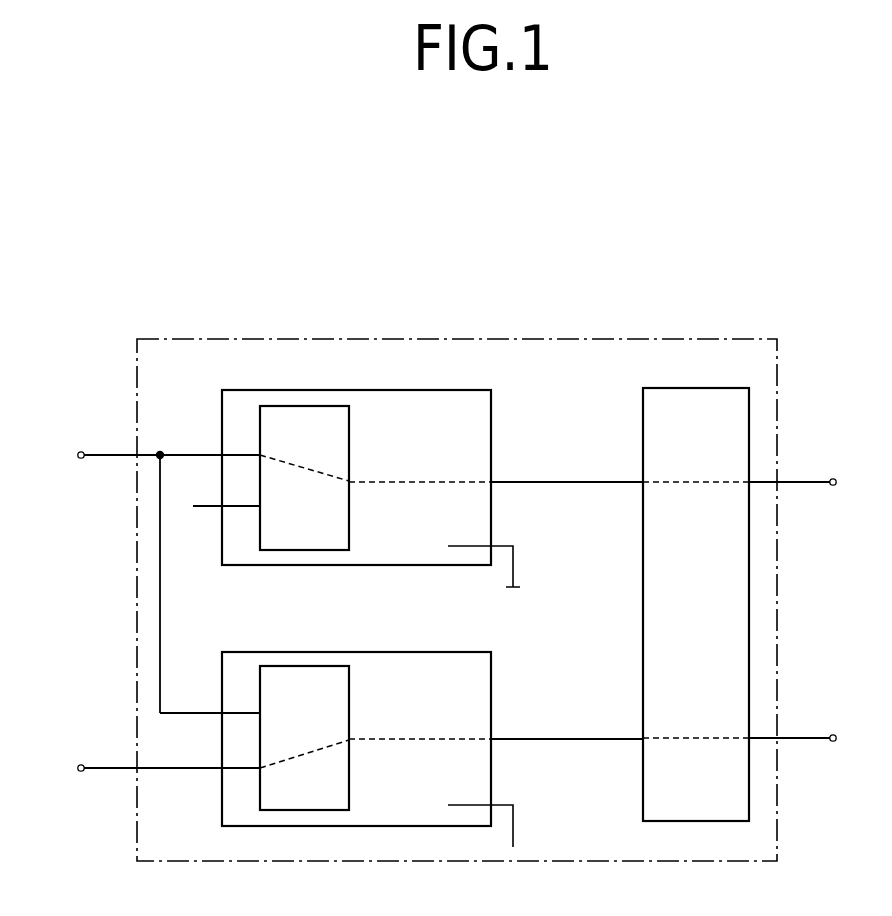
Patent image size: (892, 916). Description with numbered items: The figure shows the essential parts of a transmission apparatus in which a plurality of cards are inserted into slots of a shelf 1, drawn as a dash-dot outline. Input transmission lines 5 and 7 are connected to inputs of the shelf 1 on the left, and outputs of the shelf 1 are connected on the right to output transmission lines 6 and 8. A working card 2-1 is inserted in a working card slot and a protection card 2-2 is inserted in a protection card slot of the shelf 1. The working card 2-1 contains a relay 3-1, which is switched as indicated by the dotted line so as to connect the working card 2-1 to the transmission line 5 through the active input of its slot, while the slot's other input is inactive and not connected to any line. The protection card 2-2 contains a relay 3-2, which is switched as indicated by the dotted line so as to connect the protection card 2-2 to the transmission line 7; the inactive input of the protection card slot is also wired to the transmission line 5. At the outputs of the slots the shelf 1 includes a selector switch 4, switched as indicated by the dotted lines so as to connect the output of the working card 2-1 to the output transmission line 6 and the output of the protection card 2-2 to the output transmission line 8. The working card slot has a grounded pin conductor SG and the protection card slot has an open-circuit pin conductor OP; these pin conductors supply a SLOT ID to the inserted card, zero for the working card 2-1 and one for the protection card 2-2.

The shelf 1 is at (430, 340).
The working card 2-1 is at (356, 466).
The protection card 2-2 is at (367, 727).
The relay 3-1 is at (302, 390).
The relay 3-2 is at (302, 652).
The selector switch 4 is at (696, 583).
The input transmission line 5 is at (165, 562).
The output transmission line 6 is at (796, 462).
The input transmission line 7 is at (165, 749).
The output transmission line 8 is at (796, 716).